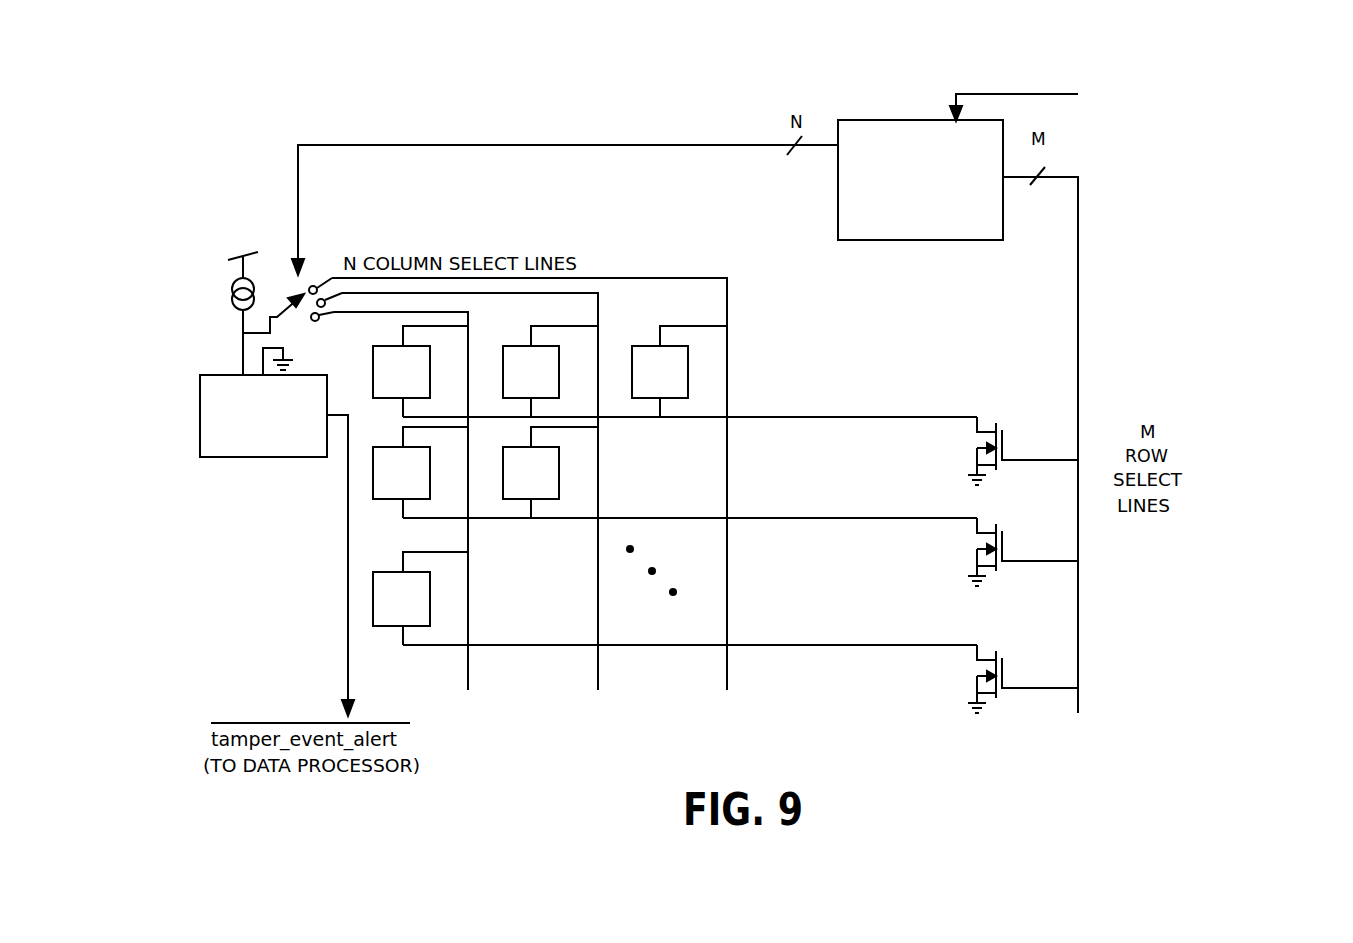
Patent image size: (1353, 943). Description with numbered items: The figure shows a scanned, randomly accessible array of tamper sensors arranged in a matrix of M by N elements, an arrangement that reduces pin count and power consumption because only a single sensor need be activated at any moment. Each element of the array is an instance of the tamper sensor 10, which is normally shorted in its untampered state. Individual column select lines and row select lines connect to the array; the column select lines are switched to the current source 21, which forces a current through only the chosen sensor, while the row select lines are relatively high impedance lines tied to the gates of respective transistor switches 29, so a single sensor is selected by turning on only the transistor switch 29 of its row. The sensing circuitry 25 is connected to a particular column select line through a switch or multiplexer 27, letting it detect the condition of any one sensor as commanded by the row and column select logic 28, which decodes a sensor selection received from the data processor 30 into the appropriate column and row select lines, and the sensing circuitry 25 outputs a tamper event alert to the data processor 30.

The tamper sensor 10 is at (430, 370).
The current source 21 is at (230, 294).
The sensing circuitry 25 is at (233, 457).
The switch or multiplexer 27 is at (304, 316).
The row and column select logic 28 is at (862, 240).
The transistor switch 29 is at (971, 446).
The data processor 30 is at (1138, 98).